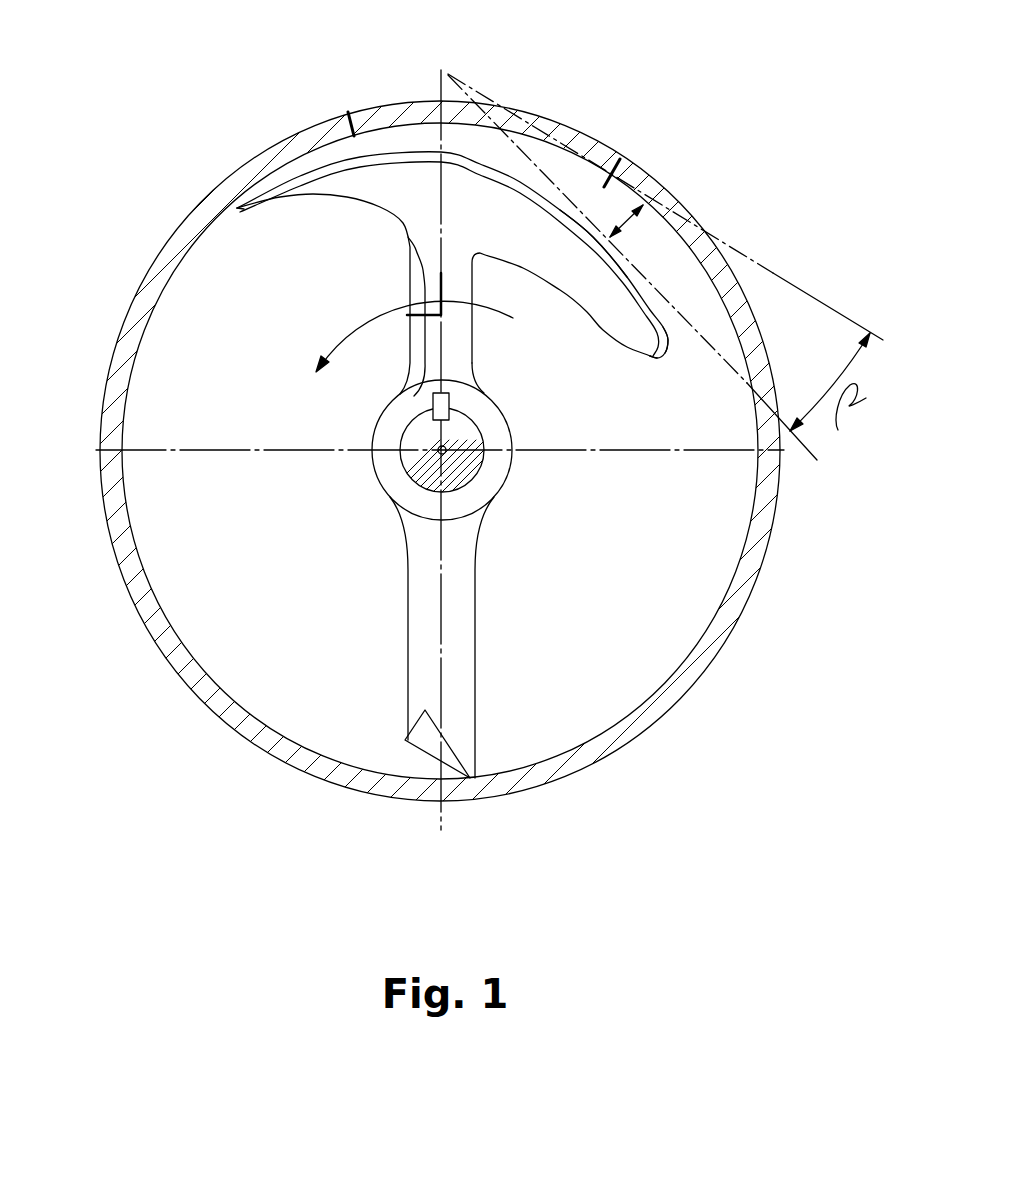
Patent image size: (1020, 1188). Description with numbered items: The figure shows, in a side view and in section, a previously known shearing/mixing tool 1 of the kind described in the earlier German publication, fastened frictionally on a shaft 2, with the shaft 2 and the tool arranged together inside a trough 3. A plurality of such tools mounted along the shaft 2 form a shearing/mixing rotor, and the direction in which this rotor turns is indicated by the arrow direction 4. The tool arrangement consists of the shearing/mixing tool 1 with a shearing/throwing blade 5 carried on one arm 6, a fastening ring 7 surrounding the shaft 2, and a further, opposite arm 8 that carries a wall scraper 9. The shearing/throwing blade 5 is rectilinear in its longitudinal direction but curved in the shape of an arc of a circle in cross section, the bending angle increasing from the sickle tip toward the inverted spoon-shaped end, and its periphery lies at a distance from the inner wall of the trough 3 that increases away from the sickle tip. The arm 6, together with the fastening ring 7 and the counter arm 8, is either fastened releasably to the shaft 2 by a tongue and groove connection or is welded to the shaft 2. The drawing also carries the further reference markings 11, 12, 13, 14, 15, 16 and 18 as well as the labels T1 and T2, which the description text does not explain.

The shearing/mixing tool 1 is at (415, 200).
The shaft 2 is at (420, 470).
The trough 3 is at (143, 608).
The arrow direction 4 is at (350, 328).
The shearing/throwing blade 5 is at (522, 230).
The arm 6 is at (455, 285).
The fastening ring 7 is at (490, 480).
The arm 8 is at (462, 628).
The wall scraper 9 is at (427, 735).
The key / axis of rotation 11 is at (455, 447).
The blade leading end 12 is at (227, 213).
The blade trailing end 13 is at (653, 350).
The cutting edge 14 is at (637, 269).
The housing inner wall 15 is at (506, 128).
The gap between blade and housing wall 16 is at (627, 227).
The blade tip radius 18 is at (665, 328).
The tangent line 1 T1 is at (826, 302).
The tangent line 2 T2 is at (752, 388).